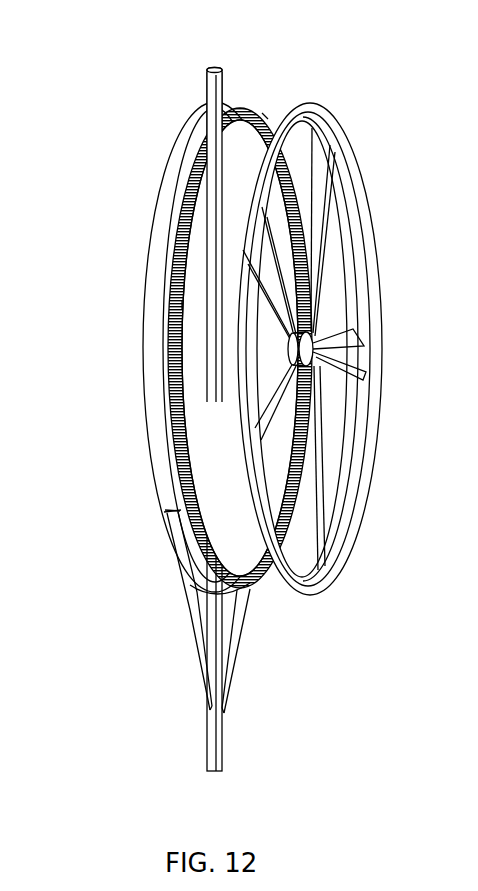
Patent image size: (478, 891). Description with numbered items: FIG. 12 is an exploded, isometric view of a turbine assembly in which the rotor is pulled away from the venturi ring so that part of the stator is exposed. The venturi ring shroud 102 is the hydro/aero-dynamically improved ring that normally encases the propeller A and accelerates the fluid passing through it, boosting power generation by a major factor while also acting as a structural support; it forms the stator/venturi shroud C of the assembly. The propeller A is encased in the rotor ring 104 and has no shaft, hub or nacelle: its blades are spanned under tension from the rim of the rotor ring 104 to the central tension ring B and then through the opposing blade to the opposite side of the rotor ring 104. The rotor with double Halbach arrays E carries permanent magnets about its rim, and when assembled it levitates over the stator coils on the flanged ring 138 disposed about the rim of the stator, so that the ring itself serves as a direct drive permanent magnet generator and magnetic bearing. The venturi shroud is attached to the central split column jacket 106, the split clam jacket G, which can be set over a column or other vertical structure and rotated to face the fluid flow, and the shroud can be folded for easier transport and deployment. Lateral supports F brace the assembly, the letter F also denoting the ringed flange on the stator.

The venturi ring shroud 102 is at (153, 470).
The rotor ring 104 is at (287, 107).
The central split column jacket 106 is at (210, 750).
The flanged ring 138 is at (197, 162).
The propeller A is at (350, 342).
The tension ring B is at (310, 348).
The stator/venturi shroud C is at (165, 487).
The rotor with double Halbach arrays E is at (287, 588).
The lateral supports F is at (188, 585).
The split clam jacket G is at (212, 727).
The tooth f is at (203, 143).